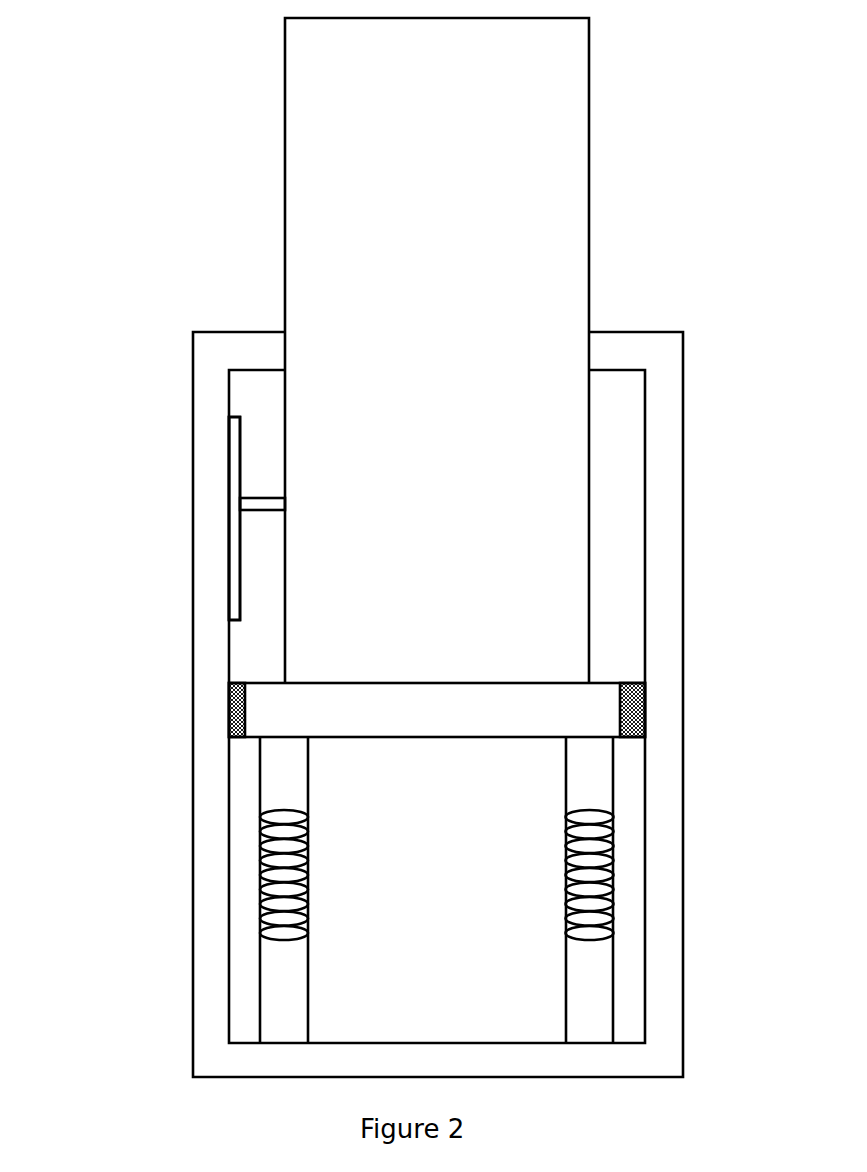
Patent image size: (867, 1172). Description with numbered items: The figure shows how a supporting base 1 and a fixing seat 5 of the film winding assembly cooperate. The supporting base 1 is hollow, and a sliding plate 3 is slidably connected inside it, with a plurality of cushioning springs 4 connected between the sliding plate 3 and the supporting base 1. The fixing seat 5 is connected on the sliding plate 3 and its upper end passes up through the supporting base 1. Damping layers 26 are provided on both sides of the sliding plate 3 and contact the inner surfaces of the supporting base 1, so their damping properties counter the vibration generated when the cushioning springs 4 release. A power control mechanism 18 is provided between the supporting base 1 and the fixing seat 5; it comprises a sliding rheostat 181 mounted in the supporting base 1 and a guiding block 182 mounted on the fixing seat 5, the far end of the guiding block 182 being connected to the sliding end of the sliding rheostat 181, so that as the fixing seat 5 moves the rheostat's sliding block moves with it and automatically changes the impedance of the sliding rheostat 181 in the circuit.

The supporting base 1 is at (684, 525).
The sliding plate 3 is at (428, 737).
The cushioning spring 4 is at (313, 890).
The fixing seat 5 is at (590, 213).
The power control mechanism 18 is at (236, 588).
The damping layer 26 is at (632, 711).
The sliding rheostat 181 is at (238, 435).
The guiding block 182 is at (248, 503).